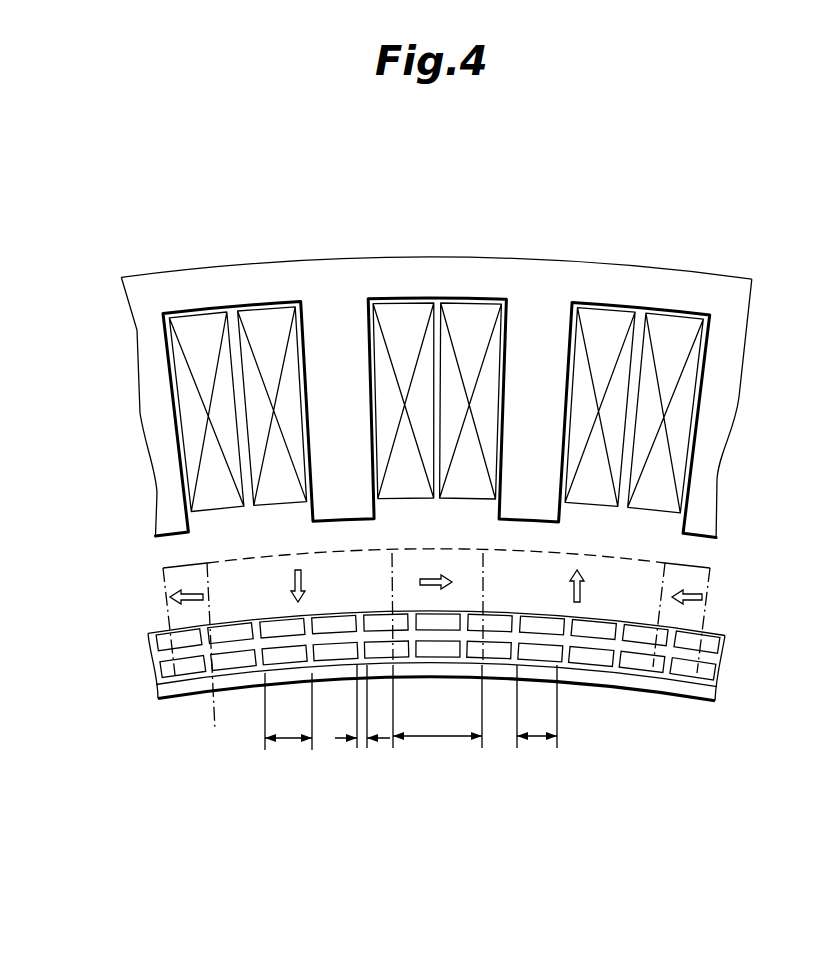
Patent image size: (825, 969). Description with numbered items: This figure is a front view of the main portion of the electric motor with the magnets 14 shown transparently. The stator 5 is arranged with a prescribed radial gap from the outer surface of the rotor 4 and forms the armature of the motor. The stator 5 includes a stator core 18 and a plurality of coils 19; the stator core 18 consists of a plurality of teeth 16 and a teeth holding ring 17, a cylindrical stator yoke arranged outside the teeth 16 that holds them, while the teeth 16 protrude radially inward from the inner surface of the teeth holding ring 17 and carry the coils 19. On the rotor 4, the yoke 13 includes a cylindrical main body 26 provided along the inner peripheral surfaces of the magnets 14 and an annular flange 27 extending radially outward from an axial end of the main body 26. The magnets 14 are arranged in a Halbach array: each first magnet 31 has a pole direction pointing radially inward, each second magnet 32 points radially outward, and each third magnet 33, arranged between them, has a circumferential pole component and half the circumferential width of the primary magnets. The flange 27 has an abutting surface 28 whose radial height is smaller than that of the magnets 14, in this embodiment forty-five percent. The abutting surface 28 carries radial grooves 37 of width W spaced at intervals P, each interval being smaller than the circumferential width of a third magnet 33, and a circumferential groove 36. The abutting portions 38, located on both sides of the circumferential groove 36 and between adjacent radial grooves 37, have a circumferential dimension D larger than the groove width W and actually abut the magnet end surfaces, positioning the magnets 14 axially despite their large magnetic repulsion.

The rotor 4 is at (424, 645).
The stator 5 is at (418, 357).
The yoke 13 is at (219, 659).
The magnet 14 is at (143, 597).
The teeth 16 is at (537, 322).
The teeth holding ring 17 is at (222, 280).
The stator core 18 is at (425, 256).
The coil 19 is at (390, 303).
The main body 26 is at (439, 680).
The flange 27 is at (163, 634).
The abutting surface 28 is at (713, 636).
The first magnet 31 is at (232, 561).
The second magnet 32 is at (568, 561).
The third magnet 33 is at (163, 568).
The circumferential groove 36 is at (710, 652).
The radial groove 37 is at (665, 658).
The abutting portion 38 is at (542, 618).